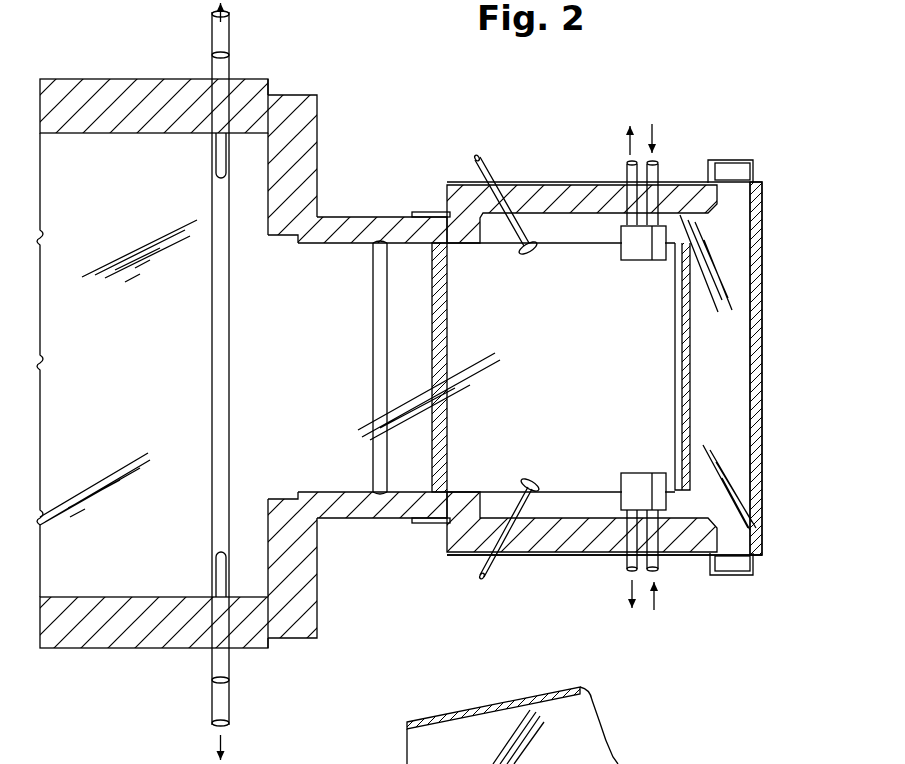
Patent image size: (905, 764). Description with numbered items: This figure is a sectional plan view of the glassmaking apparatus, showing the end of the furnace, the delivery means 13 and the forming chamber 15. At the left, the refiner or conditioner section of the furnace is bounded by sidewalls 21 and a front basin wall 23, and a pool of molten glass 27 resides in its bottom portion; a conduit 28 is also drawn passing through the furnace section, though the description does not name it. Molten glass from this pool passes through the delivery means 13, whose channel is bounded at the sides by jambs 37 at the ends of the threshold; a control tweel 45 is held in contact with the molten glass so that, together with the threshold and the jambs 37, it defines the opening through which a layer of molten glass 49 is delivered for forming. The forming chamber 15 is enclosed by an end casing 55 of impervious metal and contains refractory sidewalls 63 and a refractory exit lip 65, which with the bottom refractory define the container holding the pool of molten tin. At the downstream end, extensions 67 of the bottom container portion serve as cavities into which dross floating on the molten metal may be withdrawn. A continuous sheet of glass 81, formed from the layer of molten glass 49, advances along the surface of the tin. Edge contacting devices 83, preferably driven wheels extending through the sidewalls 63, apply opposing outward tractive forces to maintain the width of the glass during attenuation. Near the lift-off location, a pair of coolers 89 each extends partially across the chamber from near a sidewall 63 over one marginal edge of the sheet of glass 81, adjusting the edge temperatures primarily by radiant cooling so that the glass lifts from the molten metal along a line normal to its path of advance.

The delivery means 13 is at (385, 556).
The forming chamber 15 is at (594, 127).
The sidewalls 21 is at (150, 648).
The front basin wall 23 is at (317, 585).
The pool of molten glass 27 is at (130, 364).
The tube 28 is at (213, 570).
The jambs 37 is at (383, 217).
The control tweel 45 is at (447, 327).
The layer of molten glass 49 is at (421, 447).
The end casing 55 is at (762, 310).
The refractory sidewalls 63 is at (688, 552).
The refractory exit lip 65 is at (753, 382).
The extensions 67 is at (738, 160).
The continuous sheet of glass 81 is at (614, 366).
The edge contacting devices 83 is at (523, 255).
The coolers 89 is at (643, 260).